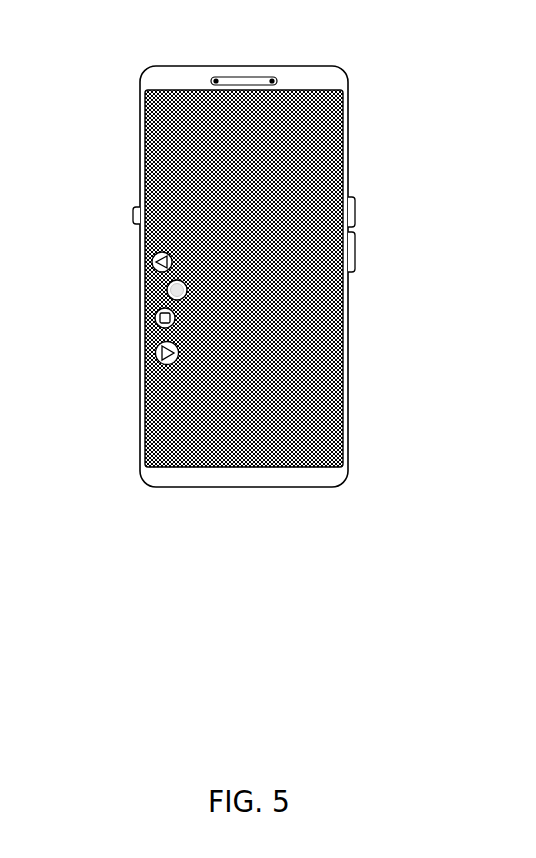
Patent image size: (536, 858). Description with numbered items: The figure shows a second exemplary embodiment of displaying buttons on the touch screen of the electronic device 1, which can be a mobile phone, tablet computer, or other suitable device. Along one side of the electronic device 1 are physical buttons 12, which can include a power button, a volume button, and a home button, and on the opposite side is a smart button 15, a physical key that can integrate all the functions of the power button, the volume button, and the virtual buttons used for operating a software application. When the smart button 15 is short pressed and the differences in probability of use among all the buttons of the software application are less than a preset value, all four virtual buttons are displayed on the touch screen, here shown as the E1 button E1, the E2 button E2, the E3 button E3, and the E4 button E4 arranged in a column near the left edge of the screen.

The electronic device 1 is at (300, 80).
The physical button 12 is at (358, 243).
The smart button 15 is at (131, 211).
The E1 button E1 is at (150, 260).
The E2 button E2 is at (164, 290).
The E3 button E3 is at (152, 318).
The E4 button E4 is at (152, 352).